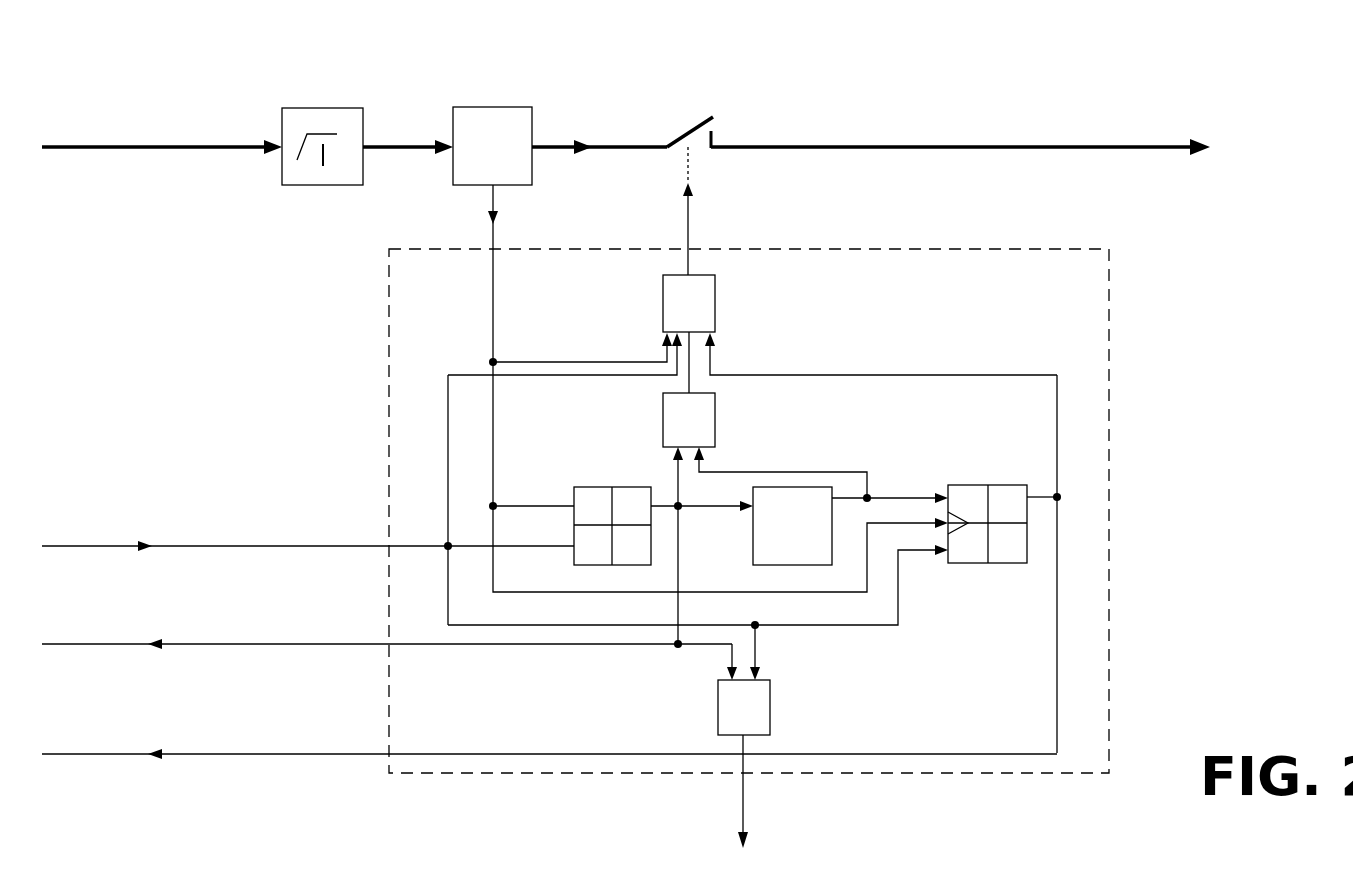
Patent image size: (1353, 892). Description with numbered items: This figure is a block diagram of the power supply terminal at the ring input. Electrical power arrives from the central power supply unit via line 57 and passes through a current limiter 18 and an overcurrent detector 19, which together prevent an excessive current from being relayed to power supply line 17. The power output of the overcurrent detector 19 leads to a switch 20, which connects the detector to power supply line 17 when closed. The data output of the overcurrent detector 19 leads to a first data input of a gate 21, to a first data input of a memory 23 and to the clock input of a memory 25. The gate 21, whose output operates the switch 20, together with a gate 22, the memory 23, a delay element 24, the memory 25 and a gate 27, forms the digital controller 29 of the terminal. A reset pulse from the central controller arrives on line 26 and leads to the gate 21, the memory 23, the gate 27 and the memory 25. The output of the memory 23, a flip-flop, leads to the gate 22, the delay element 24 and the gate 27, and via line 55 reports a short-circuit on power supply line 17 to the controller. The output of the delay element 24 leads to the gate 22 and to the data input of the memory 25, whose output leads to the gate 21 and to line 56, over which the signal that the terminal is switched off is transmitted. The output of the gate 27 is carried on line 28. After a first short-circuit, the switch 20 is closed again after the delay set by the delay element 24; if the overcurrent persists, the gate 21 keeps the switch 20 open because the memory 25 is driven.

The power supply line 17 is at (918, 147).
The current limiter 18 is at (303, 186).
The overcurrent detector 19 is at (479, 107).
The switch 20 is at (672, 145).
The gate 21 is at (716, 300).
The gate 22 is at (716, 420).
The memory 23 is at (597, 487).
The delay element 24 is at (833, 548).
The memory 25 is at (1004, 485).
The line 26 is at (345, 546).
The gate 27 is at (718, 708).
The line 28 is at (743, 812).
The digital controller 29 is at (1109, 275).
The line 55 is at (345, 644).
The line 56 is at (345, 754).
The line 57 is at (112, 147).